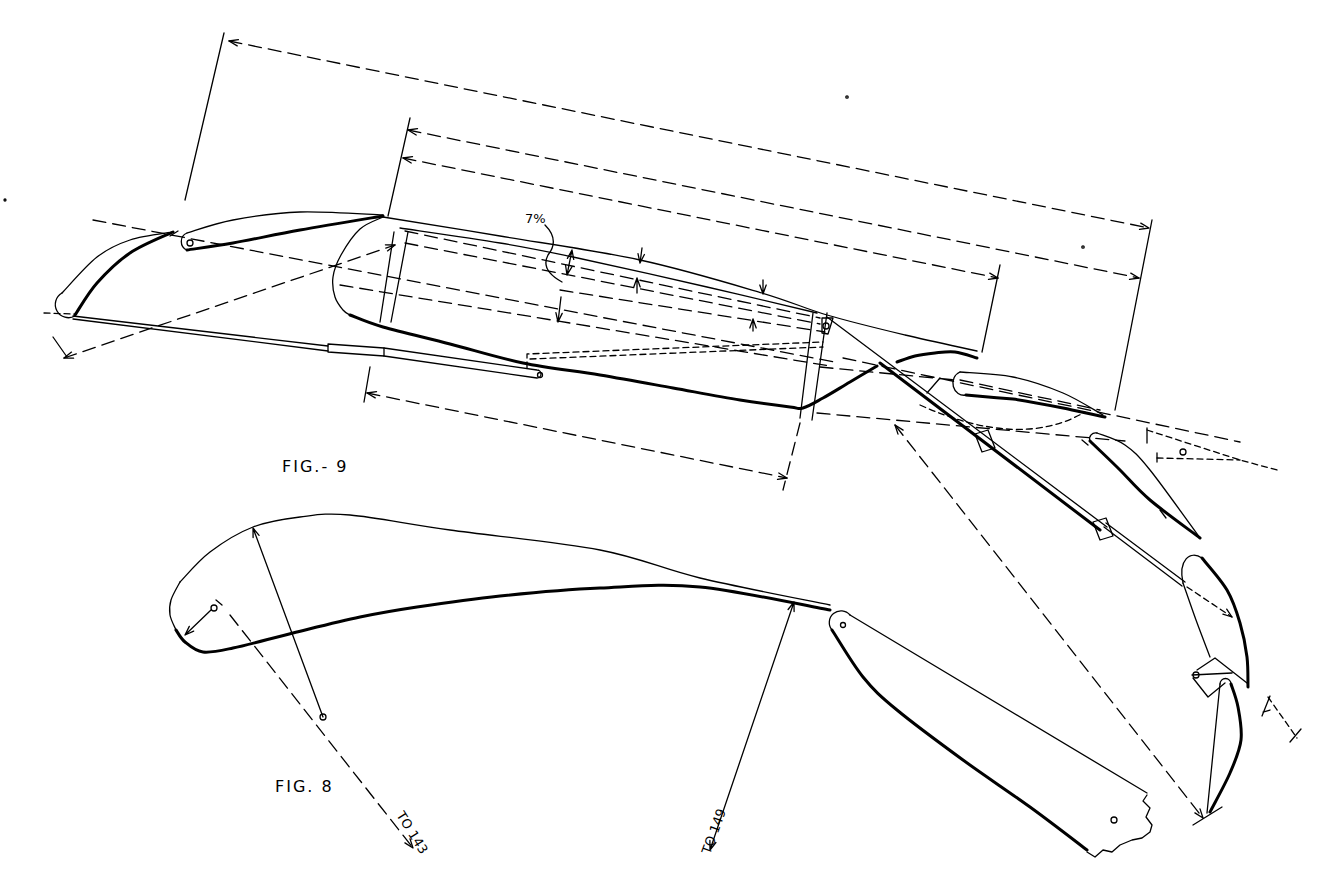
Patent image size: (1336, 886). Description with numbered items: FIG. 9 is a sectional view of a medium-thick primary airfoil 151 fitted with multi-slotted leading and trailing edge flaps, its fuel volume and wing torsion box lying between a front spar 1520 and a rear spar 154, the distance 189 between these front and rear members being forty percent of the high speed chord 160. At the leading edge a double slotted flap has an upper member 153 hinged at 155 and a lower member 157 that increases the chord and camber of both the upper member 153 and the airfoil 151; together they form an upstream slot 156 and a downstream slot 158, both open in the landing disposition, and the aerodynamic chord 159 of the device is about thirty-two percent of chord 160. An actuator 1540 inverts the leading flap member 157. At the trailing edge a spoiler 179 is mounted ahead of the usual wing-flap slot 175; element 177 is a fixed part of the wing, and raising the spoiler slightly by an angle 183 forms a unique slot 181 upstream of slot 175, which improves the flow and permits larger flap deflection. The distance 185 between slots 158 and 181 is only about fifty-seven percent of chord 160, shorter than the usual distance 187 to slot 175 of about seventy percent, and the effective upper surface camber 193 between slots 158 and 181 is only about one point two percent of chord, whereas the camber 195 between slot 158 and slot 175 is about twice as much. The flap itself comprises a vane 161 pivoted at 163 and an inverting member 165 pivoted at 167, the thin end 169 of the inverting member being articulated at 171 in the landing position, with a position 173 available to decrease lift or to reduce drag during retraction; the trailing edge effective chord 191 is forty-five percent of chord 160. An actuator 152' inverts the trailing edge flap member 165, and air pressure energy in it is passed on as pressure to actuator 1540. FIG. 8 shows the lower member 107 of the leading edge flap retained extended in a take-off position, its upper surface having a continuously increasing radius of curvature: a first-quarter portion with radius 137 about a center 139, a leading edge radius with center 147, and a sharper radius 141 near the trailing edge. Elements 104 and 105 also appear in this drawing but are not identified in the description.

In FIG. 9, the lower member 157 is at (93, 262).
In FIG. 9, the upper member 153 is at (310, 212).
In FIG. 9, the hinge 155 is at (193, 239).
In FIG. 9, the upstream slot 156 is at (175, 238).
In FIG. 9, the downstream slot 158 is at (381, 220).
In FIG. 9, the aerodynamic chord 159 is at (232, 292).
In FIG. 9, the front spar 1520 is at (410, 356).
In FIG. 9, the actuator 1540 is at (486, 372).
In FIG. 9, the primary airfoil 151 is at (598, 377).
In FIG. 9, the high speed chord 160 is at (683, 134).
In FIG. 9, the distance to flap slot 187 is at (754, 202).
In FIG. 9, the distance between slots 185 is at (696, 210).
In FIG. 9, the spar spacing distance 189 is at (617, 443).
In FIG. 9, the effective upper surface camber 193 is at (642, 248).
In FIG. 9, the effective upper surface camber 195 is at (763, 277).
In FIG. 9, the spoiler 179 is at (905, 336).
In FIG. 9, the angle 183 is at (878, 335).
In FIG. 9, the actuator 152' is at (996, 451).
In FIG. 9, the rear spar 154 is at (797, 397).
In FIG. 9, the slot 181 is at (982, 360).
In FIG. 9, the fixed wing part 177 is at (1043, 383).
In FIG. 9, the wing-flap slot 175 is at (1113, 424).
In FIG. 9, the vane 161 is at (1160, 512).
In FIG. 9, the vane pivot 163 is at (1082, 440).
In FIG. 9, the inverting member pivot 167 is at (1190, 446).
In FIG. 9, the inverting member 165 is at (1012, 438).
In FIG. 9, the thin end 169 is at (873, 421).
In FIG. 9, the trailing edge effective chord 191 is at (1200, 545).
In FIG. 9, the articulation 171 is at (1192, 675).
In FIG. 9, the position 173 is at (1290, 713).
In FIG. 8, the lower member 107 is at (482, 600).
In FIG. 8, the center of curvature 147 is at (216, 614).
In FIG. 8, the radius of curvature 137 is at (302, 658).
In FIG. 8, the center 139 is at (325, 720).
In FIG. 8, the radius 141 is at (757, 707).
In FIG. 8, the flap airfoil 104 is at (848, 625).
In FIG. 8, the flap pivot 105 is at (1114, 816).